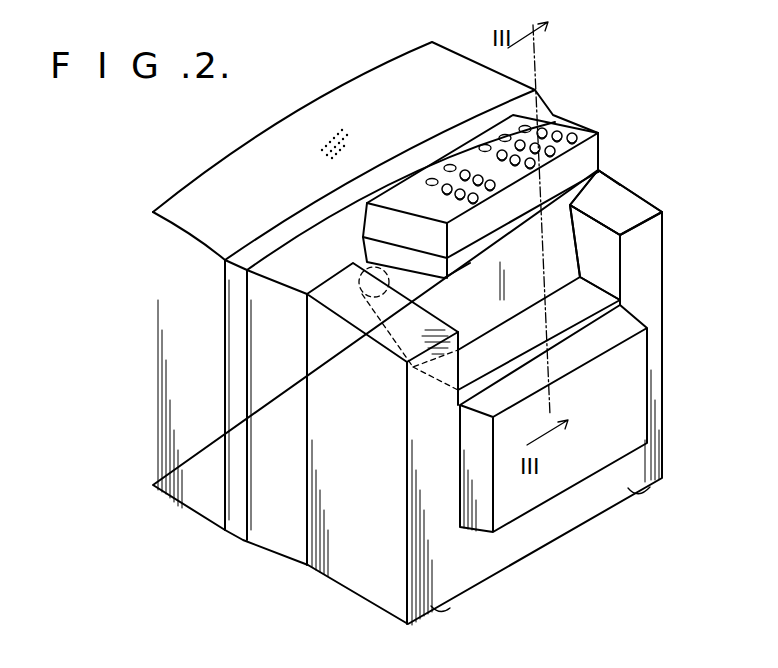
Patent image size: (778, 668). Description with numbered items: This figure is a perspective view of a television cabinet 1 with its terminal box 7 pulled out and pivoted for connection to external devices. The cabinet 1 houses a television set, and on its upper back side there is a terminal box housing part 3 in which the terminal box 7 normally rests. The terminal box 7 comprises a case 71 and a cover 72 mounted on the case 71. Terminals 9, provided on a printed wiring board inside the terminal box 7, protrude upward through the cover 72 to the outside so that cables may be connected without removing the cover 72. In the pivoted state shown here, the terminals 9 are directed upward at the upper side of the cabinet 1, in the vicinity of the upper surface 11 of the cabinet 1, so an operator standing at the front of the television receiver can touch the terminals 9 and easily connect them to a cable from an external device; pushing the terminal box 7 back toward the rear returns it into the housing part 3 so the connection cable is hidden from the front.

The cabinet 1 is at (152, 403).
The terminal box housing part 3 is at (607, 255).
The terminal box 7 is at (600, 147).
The terminals 9 is at (561, 120).
The upper surface 11 is at (648, 198).
The case 71 is at (600, 182).
The cover 72 is at (602, 150).